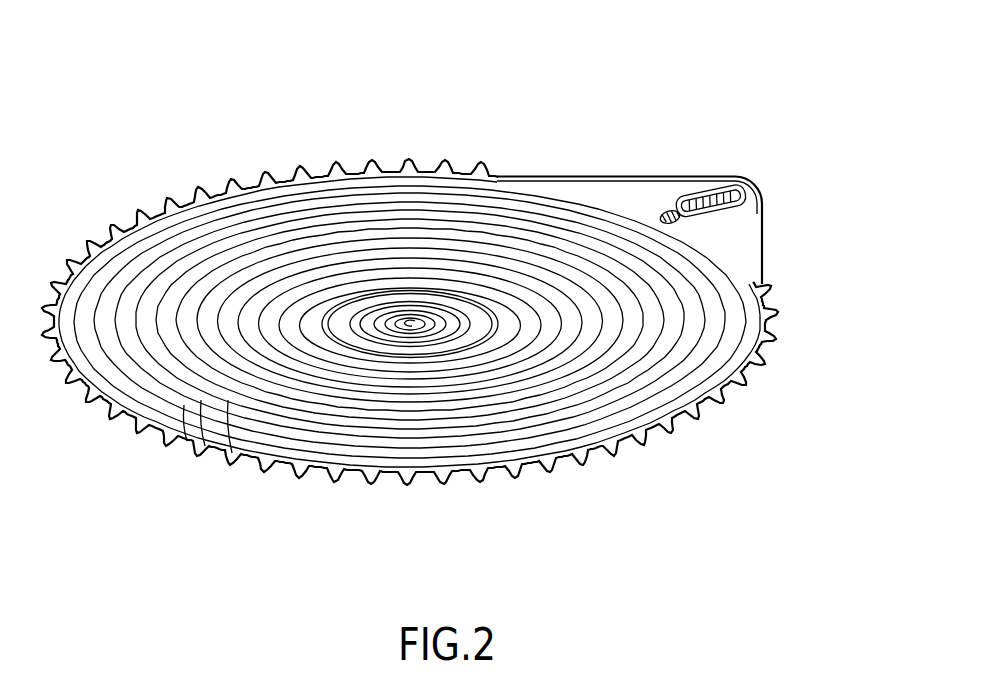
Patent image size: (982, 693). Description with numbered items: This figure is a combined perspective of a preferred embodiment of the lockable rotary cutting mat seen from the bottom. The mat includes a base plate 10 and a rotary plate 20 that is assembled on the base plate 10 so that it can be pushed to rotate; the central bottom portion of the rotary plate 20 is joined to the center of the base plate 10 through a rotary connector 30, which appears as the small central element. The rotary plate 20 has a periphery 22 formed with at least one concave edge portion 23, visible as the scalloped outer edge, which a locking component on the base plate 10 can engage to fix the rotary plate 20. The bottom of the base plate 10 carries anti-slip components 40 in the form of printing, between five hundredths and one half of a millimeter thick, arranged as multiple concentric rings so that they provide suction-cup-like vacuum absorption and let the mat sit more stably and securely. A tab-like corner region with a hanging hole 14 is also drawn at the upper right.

The base plate 10 is at (774, 228).
The hanging hole 14 is at (683, 223).
The rotary plate 20 is at (410, 287).
The periphery 22 is at (409, 322).
The concave edge portion 23 is at (310, 178).
The rotary connector 30 is at (454, 363).
The anti-slip components 40 is at (231, 454).